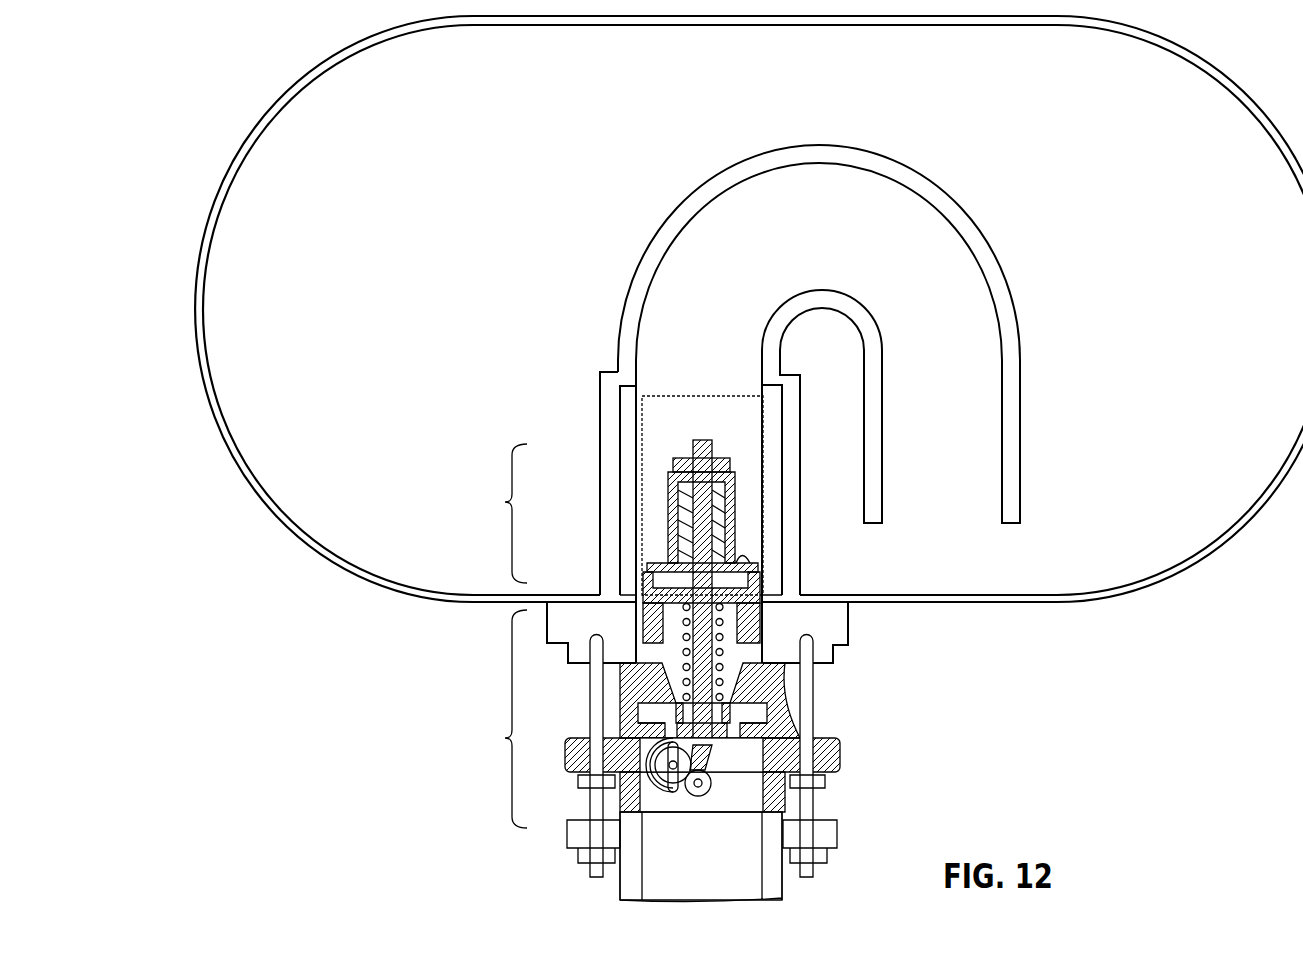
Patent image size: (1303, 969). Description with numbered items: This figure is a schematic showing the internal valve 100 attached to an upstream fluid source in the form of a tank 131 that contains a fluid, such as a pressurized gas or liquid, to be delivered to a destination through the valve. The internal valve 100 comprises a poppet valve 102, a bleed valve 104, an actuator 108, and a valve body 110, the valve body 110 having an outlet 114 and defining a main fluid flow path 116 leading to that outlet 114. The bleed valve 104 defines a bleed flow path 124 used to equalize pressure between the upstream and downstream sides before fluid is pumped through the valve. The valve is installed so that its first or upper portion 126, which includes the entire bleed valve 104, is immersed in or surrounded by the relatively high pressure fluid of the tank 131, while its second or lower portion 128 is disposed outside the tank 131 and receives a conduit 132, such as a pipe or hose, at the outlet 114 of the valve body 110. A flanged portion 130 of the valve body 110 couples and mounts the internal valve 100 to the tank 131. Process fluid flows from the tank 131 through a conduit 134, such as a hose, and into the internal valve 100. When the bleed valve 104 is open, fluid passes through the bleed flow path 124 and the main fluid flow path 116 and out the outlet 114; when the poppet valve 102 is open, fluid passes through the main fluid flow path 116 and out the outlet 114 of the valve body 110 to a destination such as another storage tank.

The internal valve 100 is at (697, 570).
The poppet valve 102 is at (639, 565).
The bleed valve 104 is at (724, 449).
The actuator 108 is at (653, 797).
The valve body 110 is at (768, 705).
The outlet 114 is at (737, 815).
The main fluid flow path 116 is at (760, 592).
The bleed flow path 124 is at (735, 512).
The upper portion 126 is at (496, 513).
The lower portion 128 is at (496, 719).
The flanged portion 130 is at (837, 753).
The tank 131 is at (1127, 593).
The conduit 132 is at (773, 893).
The conduit 134 is at (1020, 320).